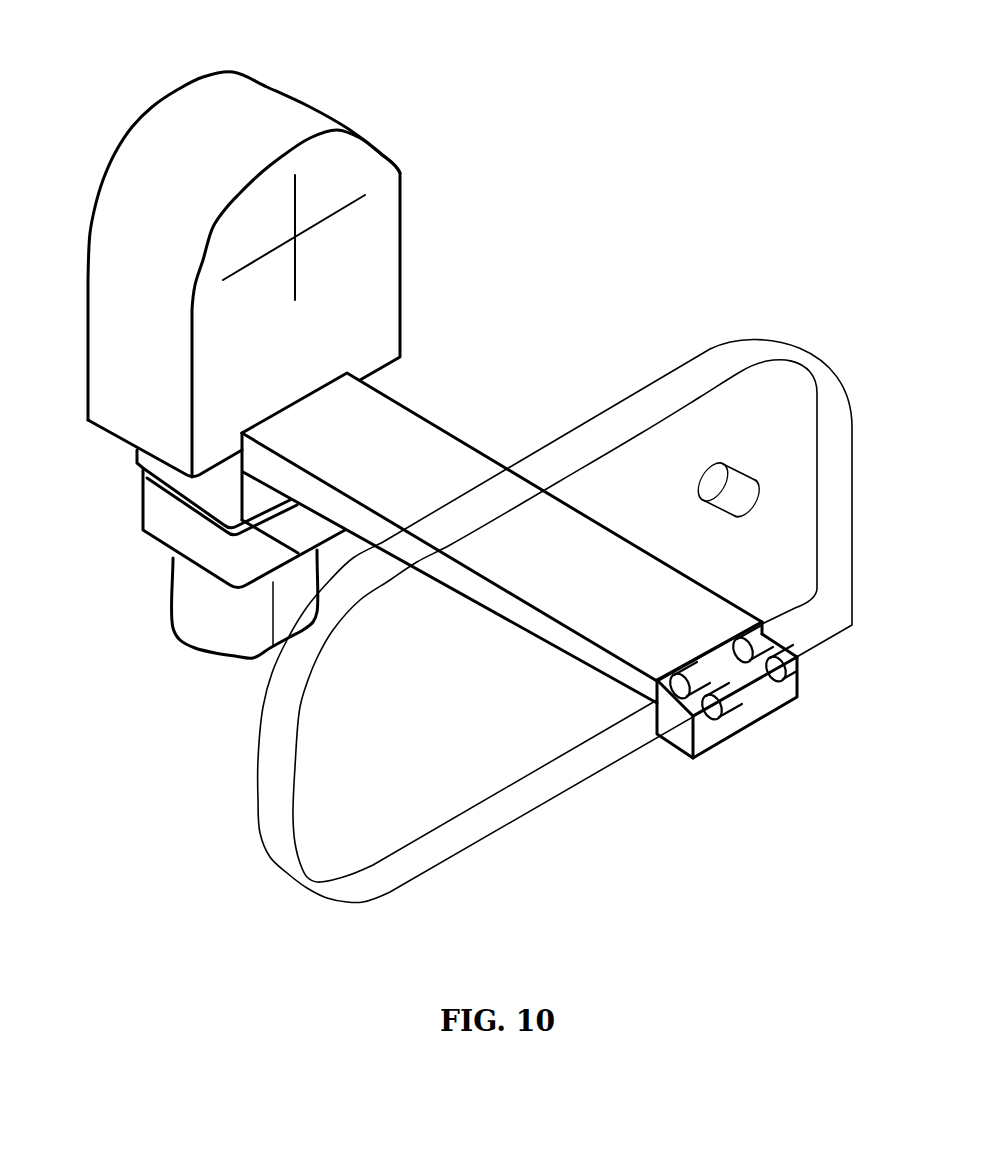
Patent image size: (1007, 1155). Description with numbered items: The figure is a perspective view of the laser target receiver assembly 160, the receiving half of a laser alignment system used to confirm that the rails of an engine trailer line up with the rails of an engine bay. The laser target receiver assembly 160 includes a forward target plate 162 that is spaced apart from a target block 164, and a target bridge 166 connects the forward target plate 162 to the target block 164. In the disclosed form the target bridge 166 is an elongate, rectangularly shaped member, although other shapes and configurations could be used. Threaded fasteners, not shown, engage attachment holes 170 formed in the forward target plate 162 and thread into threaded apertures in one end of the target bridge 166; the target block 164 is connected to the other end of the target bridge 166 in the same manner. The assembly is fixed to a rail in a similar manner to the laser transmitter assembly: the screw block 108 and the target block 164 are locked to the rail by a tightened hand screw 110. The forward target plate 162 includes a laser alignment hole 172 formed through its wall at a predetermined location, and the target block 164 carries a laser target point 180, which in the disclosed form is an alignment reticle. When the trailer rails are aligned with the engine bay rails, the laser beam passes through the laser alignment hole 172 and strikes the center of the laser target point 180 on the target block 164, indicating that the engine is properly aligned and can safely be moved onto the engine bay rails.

The screw block 108 is at (177, 516).
The hand screw 110 is at (173, 603).
The laser target receiver assembly 160 is at (542, 223).
The forward target plate 162 is at (853, 537).
The target block 164 is at (368, 167).
The target bridge 166 is at (362, 522).
The attachment holes 170 is at (747, 705).
The laser alignment hole 172 is at (747, 493).
The laser target point 180 is at (293, 235).